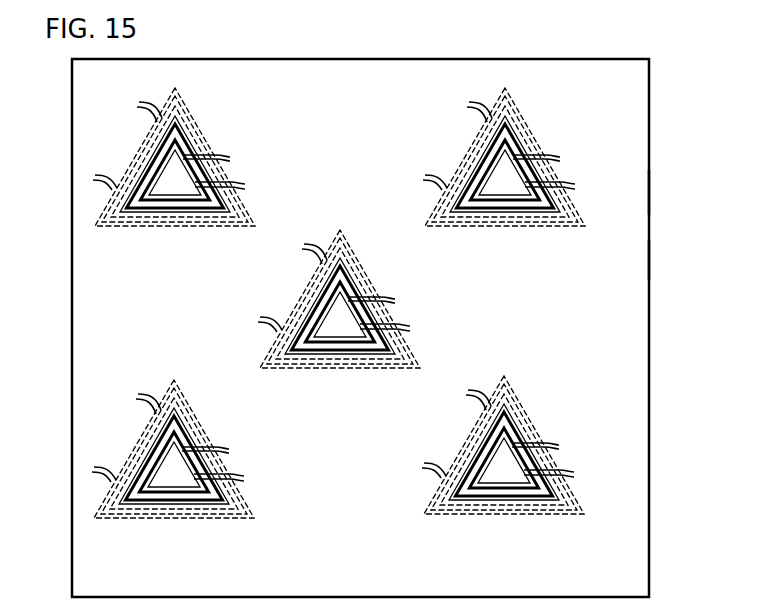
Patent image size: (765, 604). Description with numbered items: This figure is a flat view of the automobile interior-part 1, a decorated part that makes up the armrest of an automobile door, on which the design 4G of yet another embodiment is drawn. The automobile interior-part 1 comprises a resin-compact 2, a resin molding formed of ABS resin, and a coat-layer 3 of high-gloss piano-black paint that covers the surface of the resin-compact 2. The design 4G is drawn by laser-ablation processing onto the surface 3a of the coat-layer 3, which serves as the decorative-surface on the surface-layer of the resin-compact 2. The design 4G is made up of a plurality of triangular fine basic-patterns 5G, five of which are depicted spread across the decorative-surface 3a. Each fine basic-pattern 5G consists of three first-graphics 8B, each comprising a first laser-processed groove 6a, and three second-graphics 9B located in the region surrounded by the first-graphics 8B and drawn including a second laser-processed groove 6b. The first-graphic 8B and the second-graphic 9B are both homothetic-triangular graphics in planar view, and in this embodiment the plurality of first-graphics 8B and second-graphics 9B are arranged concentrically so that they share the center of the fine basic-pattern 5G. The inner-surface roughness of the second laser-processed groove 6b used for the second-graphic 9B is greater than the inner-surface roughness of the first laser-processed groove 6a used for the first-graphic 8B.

The automobile interior-part 1 is at (665, 92).
The resin-compact 2 is at (649, 137).
The coat-layer 3 is at (645, 193).
The surface of the coat-layer 3a is at (642, 260).
The design 4G is at (105, 113).
The fine basic-pattern 5G is at (335, 303).
The first laser-processed groove 6a is at (301, 251).
The second laser-processed groove 6b is at (383, 296).
The first-graphic 8B is at (257, 322).
The second-graphic 9B is at (398, 327).